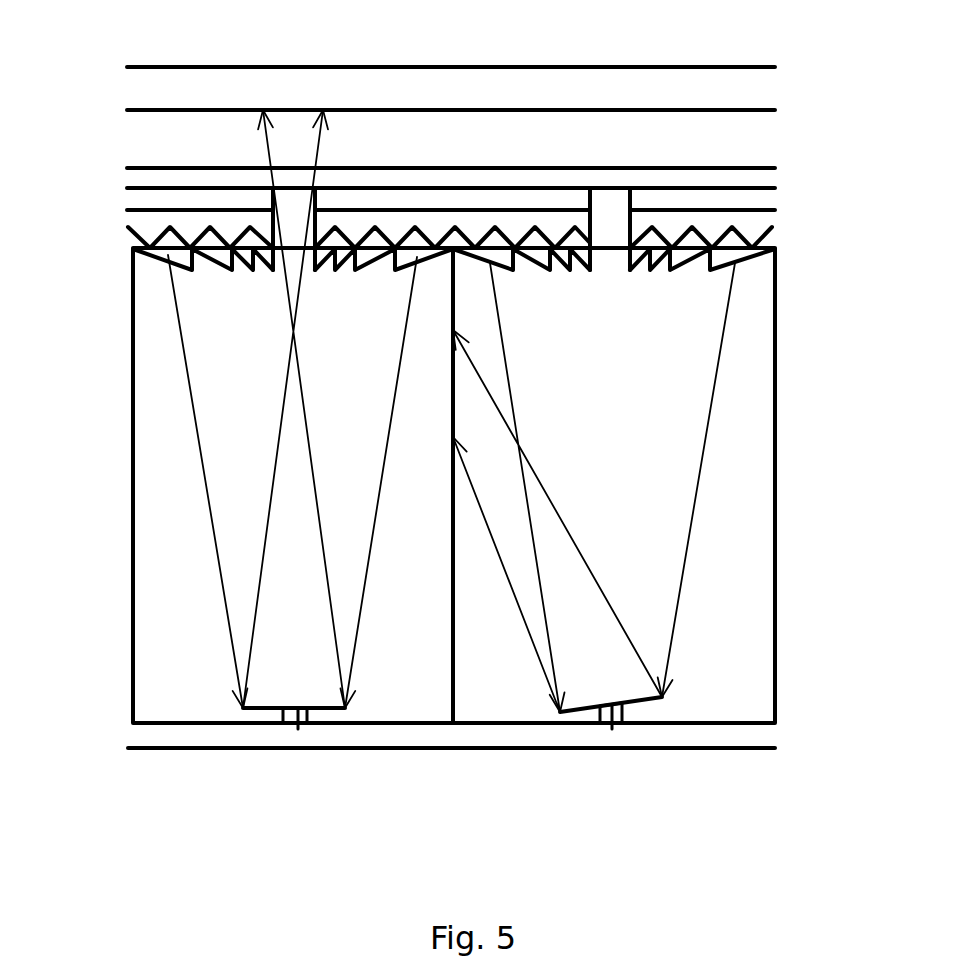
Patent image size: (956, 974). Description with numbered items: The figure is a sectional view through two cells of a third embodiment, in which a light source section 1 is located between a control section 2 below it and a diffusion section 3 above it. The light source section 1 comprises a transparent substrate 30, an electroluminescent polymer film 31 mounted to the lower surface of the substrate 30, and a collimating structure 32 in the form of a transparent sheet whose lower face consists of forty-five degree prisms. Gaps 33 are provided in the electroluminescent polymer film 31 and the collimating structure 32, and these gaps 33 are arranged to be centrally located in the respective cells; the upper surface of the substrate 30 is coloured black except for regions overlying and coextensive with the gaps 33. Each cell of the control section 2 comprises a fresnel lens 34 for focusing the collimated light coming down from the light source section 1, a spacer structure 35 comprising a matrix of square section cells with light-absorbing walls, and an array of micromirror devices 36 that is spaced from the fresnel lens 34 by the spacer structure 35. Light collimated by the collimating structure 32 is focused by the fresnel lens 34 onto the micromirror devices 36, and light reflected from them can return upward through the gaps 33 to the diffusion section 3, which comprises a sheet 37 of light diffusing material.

The light source section 1 is at (800, 167).
The control section 2 is at (803, 243).
The diffusion section 3 is at (800, 62).
The transparent substrate 30 is at (130, 180).
The electroluminescent polymer film 31 is at (140, 198).
The collimating structure 32 is at (148, 222).
The gaps 33 is at (294, 232).
The fresnel lens 34 is at (220, 255).
The spacer structure 35 is at (133, 603).
The micromirror devices 36 is at (298, 725).
The sheet of light diffusing material 37 is at (203, 95).